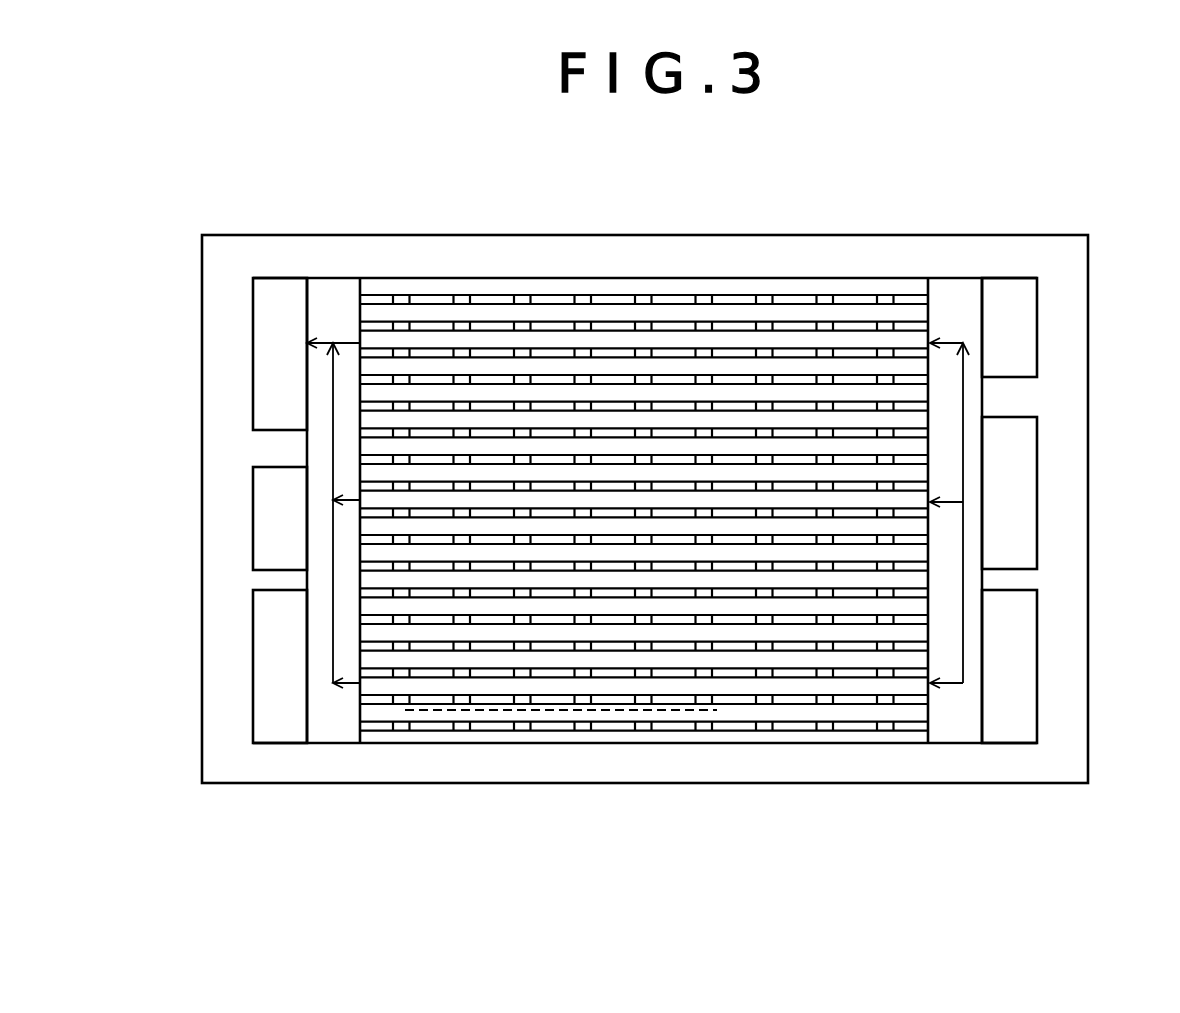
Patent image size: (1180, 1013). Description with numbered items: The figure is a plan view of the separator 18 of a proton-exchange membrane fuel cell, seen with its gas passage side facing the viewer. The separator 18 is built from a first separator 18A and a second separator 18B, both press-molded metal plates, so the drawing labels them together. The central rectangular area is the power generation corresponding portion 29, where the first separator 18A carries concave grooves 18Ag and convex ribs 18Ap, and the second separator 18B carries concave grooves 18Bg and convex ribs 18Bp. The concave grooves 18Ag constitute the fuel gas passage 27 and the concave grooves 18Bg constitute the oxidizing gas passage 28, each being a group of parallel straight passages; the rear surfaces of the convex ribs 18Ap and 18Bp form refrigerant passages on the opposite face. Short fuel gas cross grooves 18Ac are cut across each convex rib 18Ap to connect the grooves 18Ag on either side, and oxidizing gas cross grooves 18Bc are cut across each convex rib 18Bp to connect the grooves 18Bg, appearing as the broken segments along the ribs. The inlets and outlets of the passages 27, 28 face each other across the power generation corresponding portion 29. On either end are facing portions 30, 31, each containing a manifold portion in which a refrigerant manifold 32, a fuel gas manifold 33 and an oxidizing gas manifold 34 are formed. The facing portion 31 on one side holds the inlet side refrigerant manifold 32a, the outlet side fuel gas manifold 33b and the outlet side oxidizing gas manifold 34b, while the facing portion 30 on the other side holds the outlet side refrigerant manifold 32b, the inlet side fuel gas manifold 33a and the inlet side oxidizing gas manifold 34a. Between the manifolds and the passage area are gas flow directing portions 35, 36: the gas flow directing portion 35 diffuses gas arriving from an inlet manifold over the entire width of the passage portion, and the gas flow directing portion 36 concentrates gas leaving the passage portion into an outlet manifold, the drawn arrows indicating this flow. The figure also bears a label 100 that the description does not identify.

The separator 18 is at (1037, 233).
The first separator 18A is at (645, 463).
The second separator 18B is at (892, 258).
The concave grooves 18Ag is at (644, 262).
The concave grooves 18Bg is at (440, 343).
The convex ribs 18Ap is at (644, 461).
The convex ribs 18Bp is at (749, 328).
The fuel gas cross grooves 18Ac is at (763, 697).
The oxidizing gas cross grooves 18Bc is at (703, 697).
The fuel gas passage 27 is at (608, 313).
The oxidizing gas passage 28 is at (660, 239).
The power generation corresponding portion 29 is at (382, 302).
The facing portion 30 is at (963, 740).
The facing portion 31 is at (338, 723).
The refrigerant manifold 32 is at (646, 424).
The inlet side refrigerant manifold 32a is at (264, 531).
The outlet side refrigerant manifold 32b is at (1008, 328).
The fuel gas manifold 33 is at (644, 580).
The inlet side fuel gas manifold 33a is at (1018, 500).
The outlet side fuel gas manifold 33b is at (264, 678).
The oxidizing gas manifold 34 is at (643, 510).
The inlet side oxidizing gas manifold 34a is at (1008, 697).
The outlet side oxidizing gas manifold 34b is at (266, 333).
The gas flow directing portion 35 is at (938, 740).
The gas flow directing portion 36 is at (320, 730).
The electrolyte flow path 100 is at (441, 696).